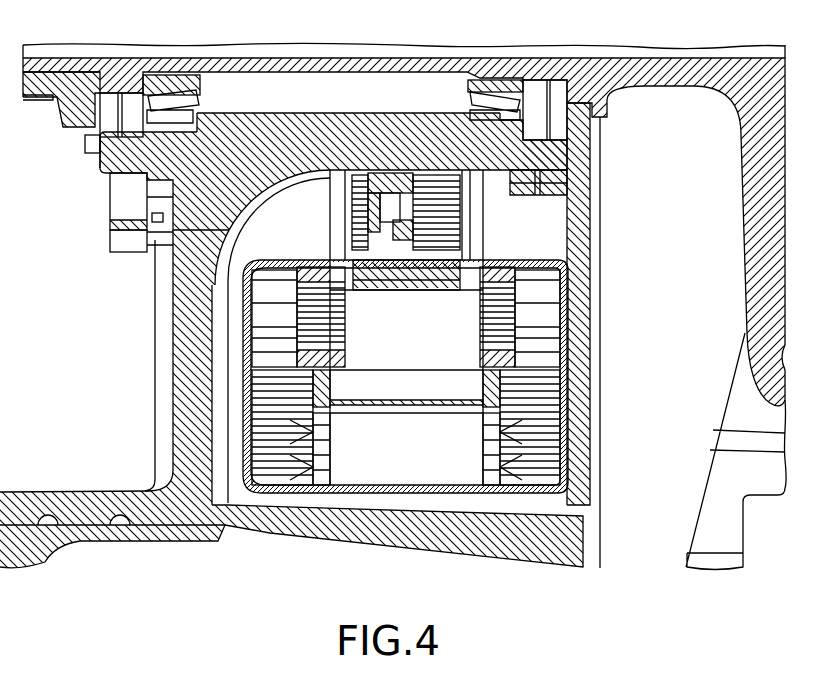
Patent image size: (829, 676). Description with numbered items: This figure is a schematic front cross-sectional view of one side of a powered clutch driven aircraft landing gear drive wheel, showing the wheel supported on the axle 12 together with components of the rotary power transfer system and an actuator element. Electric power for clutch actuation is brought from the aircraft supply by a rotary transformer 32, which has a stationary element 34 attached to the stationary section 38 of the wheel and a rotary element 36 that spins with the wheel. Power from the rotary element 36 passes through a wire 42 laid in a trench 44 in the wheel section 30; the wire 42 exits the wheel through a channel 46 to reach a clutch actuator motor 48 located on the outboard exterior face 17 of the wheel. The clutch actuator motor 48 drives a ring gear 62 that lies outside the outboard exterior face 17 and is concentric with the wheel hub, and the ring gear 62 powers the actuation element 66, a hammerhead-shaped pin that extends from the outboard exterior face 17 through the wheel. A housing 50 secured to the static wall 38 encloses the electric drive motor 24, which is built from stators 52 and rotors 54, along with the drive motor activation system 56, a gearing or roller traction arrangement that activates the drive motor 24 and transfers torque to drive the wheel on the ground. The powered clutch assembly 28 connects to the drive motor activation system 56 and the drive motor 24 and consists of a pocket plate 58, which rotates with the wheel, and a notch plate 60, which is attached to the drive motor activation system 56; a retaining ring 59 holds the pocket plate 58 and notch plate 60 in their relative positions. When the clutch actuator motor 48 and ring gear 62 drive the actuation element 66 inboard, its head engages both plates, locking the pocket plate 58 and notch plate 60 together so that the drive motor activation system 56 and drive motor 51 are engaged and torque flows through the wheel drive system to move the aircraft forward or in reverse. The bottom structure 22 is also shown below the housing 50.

The axle 12 is at (493, 63).
The outboard exterior face 17 is at (167, 353).
The bottom plate 22 is at (490, 537).
The electric drive motor 24 is at (573, 350).
The powered clutch assembly 28 is at (402, 162).
The wheel section 30 is at (233, 123).
The rotary transformer 32 is at (566, 148).
The stationary element 34 is at (553, 185).
The rotary element 36 is at (520, 188).
The stationary section 38 is at (578, 217).
The wire 42 is at (320, 167).
The trench 44 is at (547, 163).
The channel 46 is at (197, 230).
The clutch actuator motor 48 is at (128, 238).
The housing 50 is at (565, 409).
The drive motor 51 is at (233, 423).
The stator 52 is at (545, 450).
The rotor 54 is at (538, 318).
The drive motor activation system 56 is at (457, 264).
The pocket plate 58 is at (395, 222).
The retaining ring 59 is at (412, 187).
The notch plate 60 is at (387, 182).
The ring gear 62 is at (128, 197).
The actuation element 66 is at (85, 146).